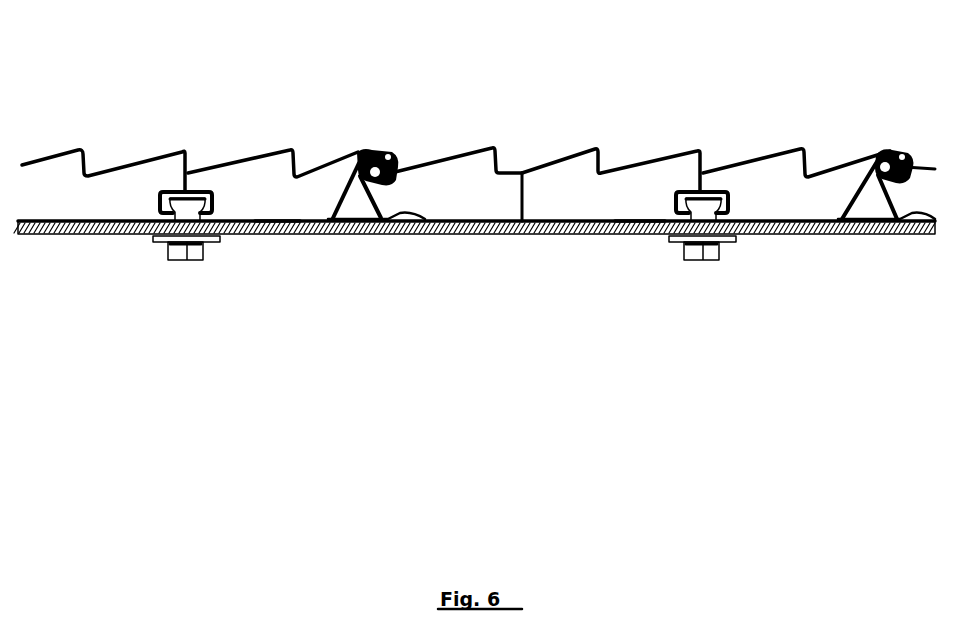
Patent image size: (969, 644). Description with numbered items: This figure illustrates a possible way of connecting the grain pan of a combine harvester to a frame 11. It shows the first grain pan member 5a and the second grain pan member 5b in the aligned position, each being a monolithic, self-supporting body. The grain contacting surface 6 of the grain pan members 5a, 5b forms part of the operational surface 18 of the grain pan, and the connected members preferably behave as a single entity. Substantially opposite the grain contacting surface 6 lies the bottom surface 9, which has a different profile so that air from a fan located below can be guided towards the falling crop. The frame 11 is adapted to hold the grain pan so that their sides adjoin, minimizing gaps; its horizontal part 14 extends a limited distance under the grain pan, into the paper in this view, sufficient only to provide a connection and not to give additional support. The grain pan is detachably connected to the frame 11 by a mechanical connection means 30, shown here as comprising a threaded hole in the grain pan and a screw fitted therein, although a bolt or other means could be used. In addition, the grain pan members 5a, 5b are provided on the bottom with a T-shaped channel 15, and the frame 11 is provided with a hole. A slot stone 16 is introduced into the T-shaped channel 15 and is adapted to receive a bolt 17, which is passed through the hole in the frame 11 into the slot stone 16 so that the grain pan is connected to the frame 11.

The operational surface 18 is at (414, 122).
The frame 11 is at (474, 323).
The horizontal part 14 is at (368, 242).
The grain contacting surface 6 is at (228, 164).
The second grain pan member 5b is at (122, 205).
The first grain pan member 5a is at (588, 205).
The bottom surface 9 is at (278, 220).
The mechanical connection means 30 is at (368, 150).
The slot stone 16 is at (177, 194).
The T-shaped channel 15 is at (165, 192).
The bolt 17 is at (185, 268).